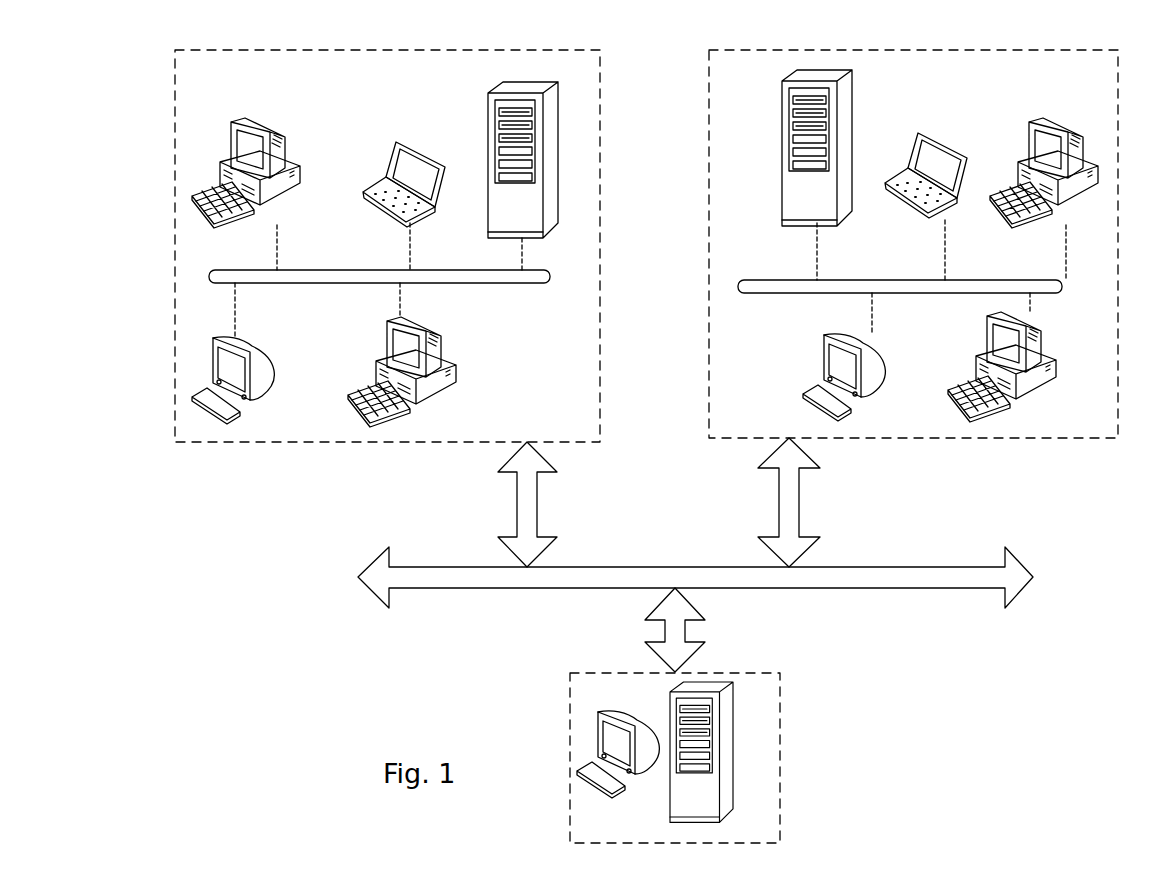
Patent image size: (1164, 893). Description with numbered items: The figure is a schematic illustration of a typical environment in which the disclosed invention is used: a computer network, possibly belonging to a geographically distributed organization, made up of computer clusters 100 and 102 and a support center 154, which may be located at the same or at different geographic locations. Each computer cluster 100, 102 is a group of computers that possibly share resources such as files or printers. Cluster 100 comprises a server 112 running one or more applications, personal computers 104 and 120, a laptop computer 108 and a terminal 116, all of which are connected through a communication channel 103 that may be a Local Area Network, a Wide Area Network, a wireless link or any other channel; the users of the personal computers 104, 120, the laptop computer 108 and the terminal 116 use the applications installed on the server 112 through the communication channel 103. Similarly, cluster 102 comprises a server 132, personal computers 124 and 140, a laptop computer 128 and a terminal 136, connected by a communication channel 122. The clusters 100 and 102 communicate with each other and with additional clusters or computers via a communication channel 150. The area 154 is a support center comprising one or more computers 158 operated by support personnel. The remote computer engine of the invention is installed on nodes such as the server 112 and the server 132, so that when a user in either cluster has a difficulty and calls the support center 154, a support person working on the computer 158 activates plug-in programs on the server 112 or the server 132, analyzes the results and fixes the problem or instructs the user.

The computer cluster 100 is at (600, 85).
The computer cluster 102 is at (1118, 96).
The communication channel 103 is at (435, 270).
The personal computer 104 is at (265, 118).
The laptop computer 108 is at (412, 145).
The server 112 is at (558, 126).
The terminal 116 is at (250, 344).
The personal computer 120 is at (446, 346).
The communication channel 122 is at (975, 280).
The personal computer 124 is at (1062, 118).
The laptop computer 128 is at (948, 141).
The server 132 is at (852, 86).
The terminal 136 is at (870, 334).
The personal computer 140 is at (1040, 336).
The communication channel 150 is at (884, 566).
The support center 154 is at (780, 696).
The computer 158 is at (732, 736).